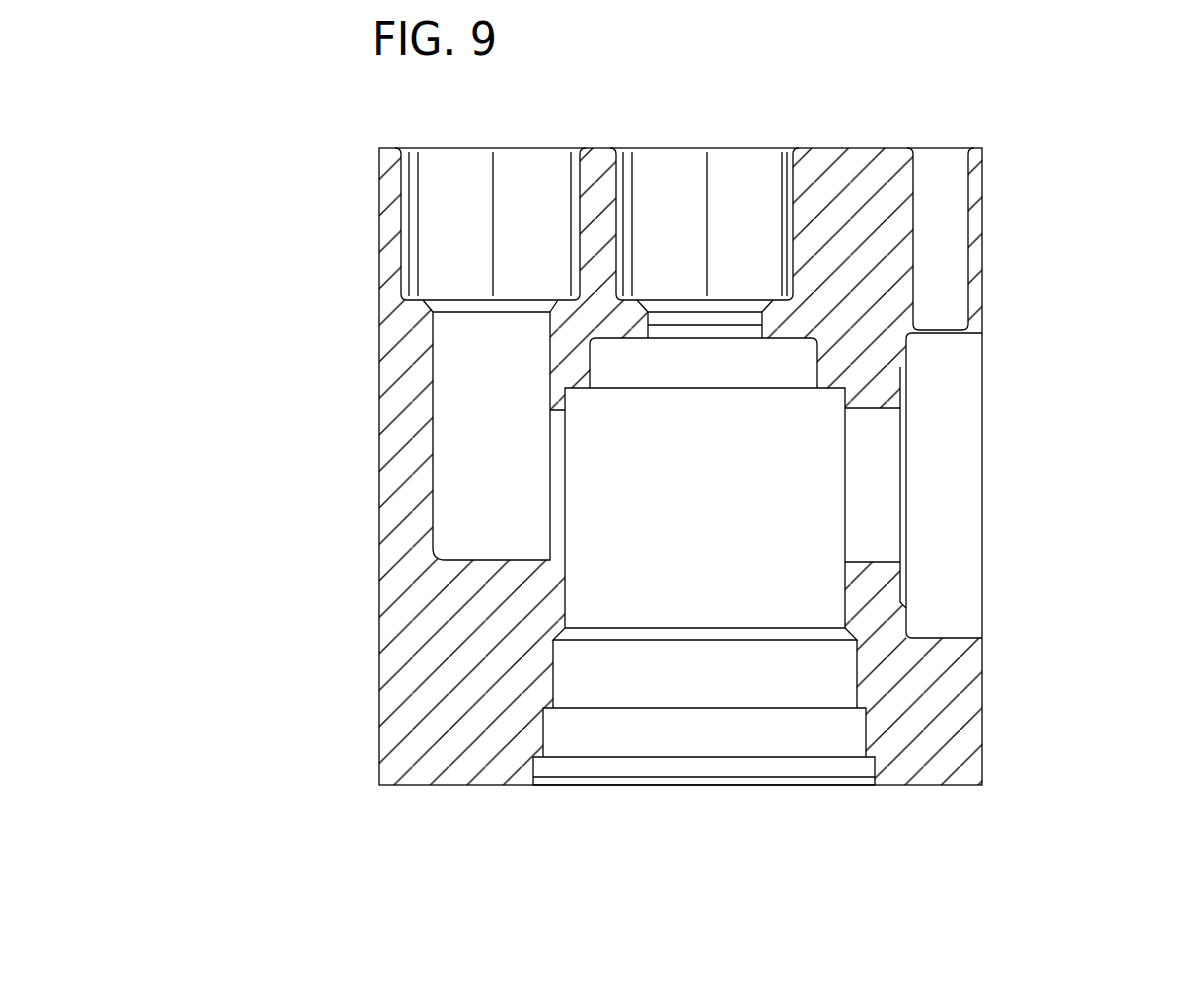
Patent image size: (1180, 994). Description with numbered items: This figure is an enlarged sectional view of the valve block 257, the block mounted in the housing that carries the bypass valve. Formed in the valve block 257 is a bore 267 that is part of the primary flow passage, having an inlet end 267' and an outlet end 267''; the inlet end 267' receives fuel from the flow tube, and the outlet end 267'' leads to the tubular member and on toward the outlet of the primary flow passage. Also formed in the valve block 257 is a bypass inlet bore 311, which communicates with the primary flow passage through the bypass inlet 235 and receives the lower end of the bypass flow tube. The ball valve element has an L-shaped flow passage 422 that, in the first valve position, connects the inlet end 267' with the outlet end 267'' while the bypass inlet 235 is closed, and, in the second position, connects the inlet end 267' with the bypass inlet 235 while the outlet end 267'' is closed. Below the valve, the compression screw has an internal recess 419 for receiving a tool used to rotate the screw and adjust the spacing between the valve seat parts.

The valve block 257 is at (905, 252).
The inlet end of bore 267' is at (402, 230).
The bore 267 is at (395, 433).
The outlet end of bore 267'' is at (704, 811).
The bypass inlet 235 is at (792, 212).
The bypass inlet bore 311 is at (775, 209).
The L-shaped flow passage 422 is at (726, 503).
The internal recess 419 is at (697, 741).